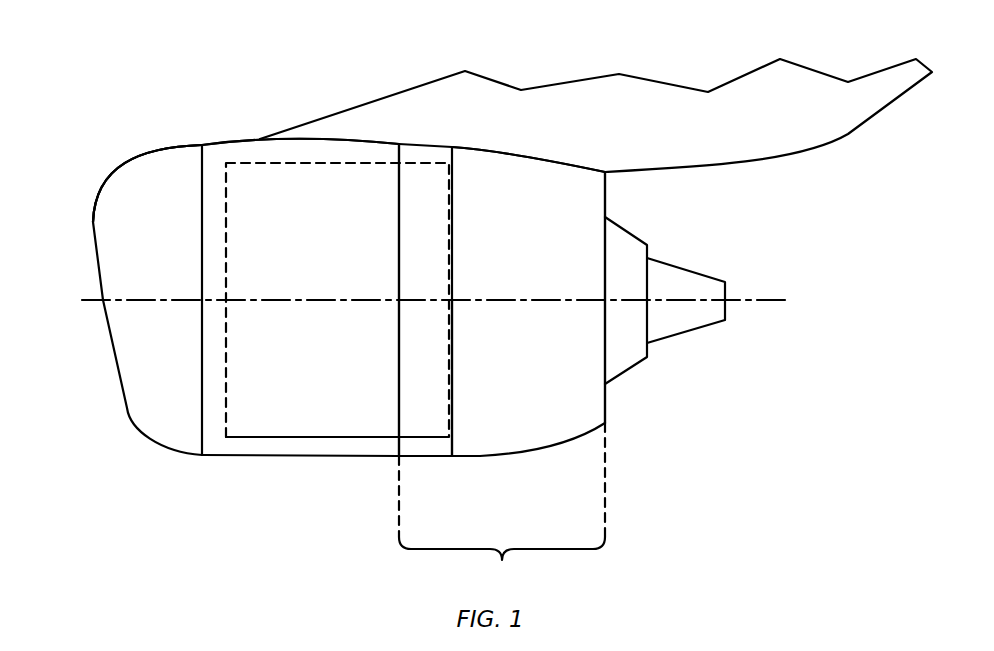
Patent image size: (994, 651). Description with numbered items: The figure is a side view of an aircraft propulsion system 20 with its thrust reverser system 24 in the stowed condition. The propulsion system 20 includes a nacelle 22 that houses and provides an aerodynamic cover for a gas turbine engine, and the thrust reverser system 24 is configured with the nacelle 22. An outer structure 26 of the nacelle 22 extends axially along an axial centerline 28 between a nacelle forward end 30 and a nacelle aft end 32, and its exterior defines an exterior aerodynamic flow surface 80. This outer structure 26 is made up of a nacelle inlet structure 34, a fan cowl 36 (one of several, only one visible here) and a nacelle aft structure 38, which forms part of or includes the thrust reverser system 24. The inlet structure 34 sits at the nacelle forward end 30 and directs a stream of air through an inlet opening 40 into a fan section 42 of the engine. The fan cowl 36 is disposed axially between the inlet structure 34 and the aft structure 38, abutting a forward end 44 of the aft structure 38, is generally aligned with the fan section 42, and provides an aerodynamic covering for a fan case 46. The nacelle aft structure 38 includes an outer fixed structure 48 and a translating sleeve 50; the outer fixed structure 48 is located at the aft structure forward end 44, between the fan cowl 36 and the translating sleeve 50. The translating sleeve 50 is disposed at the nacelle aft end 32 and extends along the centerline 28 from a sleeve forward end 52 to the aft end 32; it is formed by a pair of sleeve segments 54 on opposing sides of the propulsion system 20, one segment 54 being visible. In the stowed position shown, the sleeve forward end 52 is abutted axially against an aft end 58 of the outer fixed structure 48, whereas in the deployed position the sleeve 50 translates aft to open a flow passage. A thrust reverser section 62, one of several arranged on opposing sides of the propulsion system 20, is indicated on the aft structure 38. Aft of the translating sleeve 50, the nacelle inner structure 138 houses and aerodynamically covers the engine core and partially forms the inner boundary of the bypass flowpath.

The aircraft propulsion system 20 is at (82, 102).
The nacelle 22 is at (246, 139).
The outer structure 26 is at (156, 140).
The thrust reverser system 24 is at (468, 130).
The axial centerline 28 is at (88, 303).
The nacelle forward end 30 is at (93, 224).
The nacelle aft end 32 is at (605, 195).
The nacelle inlet structure 34 is at (160, 468).
The fan cowl 36 is at (334, 470).
The nacelle aft structure 38 is at (502, 506).
The inlet opening 40 is at (97, 268).
The fan section 42 is at (283, 152).
The forward end of the nacelle aft structure 44 is at (398, 446).
The fan case 46 is at (268, 438).
The outer fixed structure 48 is at (432, 468).
The translating sleeve 50 is at (542, 476).
The sleeve segment 54 is at (547, 466).
The forward end of the translating sleeve 52 is at (450, 392).
The aft end of the outer fixed structure 58 is at (453, 376).
The thrust reverser section 62 is at (530, 142).
The exterior aerodynamic flow surface 80 is at (365, 140).
The nacelle inner structure 138 is at (633, 366).